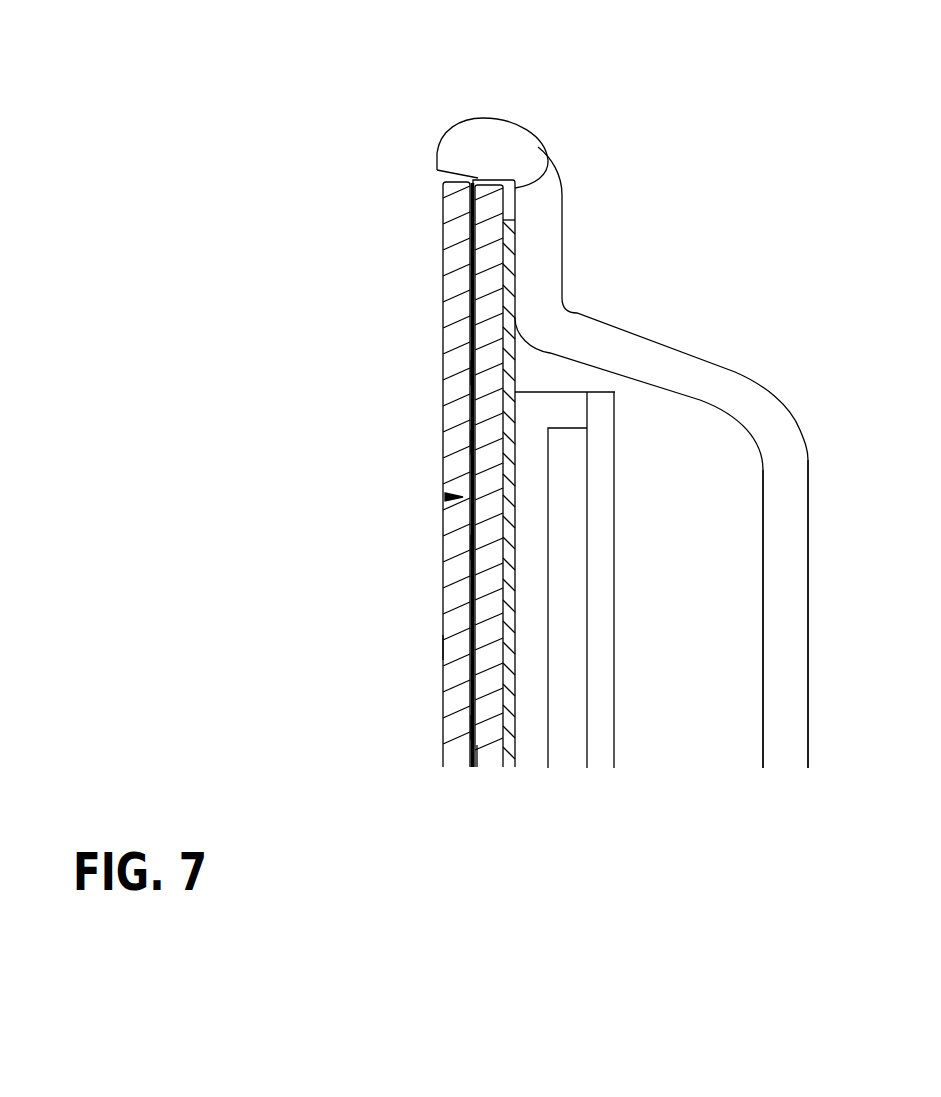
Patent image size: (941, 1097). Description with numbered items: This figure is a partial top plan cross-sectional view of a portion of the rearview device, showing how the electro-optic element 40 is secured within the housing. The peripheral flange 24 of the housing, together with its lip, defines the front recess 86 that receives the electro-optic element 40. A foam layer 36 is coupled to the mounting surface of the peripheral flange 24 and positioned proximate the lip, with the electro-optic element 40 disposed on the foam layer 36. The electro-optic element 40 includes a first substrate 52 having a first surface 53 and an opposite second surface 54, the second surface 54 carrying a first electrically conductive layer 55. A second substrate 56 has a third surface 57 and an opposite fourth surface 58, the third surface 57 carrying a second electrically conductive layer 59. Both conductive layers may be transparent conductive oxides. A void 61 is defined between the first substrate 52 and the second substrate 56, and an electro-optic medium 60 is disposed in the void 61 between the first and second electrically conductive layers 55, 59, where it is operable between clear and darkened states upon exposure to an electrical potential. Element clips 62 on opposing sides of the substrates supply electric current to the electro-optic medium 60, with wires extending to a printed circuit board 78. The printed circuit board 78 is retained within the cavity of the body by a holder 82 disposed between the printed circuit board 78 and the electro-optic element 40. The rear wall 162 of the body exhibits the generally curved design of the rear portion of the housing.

The peripheral flange 24 is at (500, 142).
The front recess 86 is at (510, 193).
The element clips 62 is at (480, 180).
The first surface 53 is at (443, 208).
The first substrate 52 is at (460, 278).
The second surface 54 is at (470, 310).
The first electrically conductive layer 55 is at (468, 372).
The electro-optic medium 60 is at (468, 440).
The electro-optic element 40 is at (446, 497).
The void 61 is at (468, 545).
The second substrate 56 is at (485, 598).
The third surface 57 is at (443, 647).
The second electrically conductive layer 59 is at (473, 728).
The fourth surface 58 is at (477, 743).
The foam layer 36 is at (515, 740).
The holder 82 is at (550, 410).
The printed circuit board 78 is at (600, 708).
The rear wall 162 is at (765, 667).